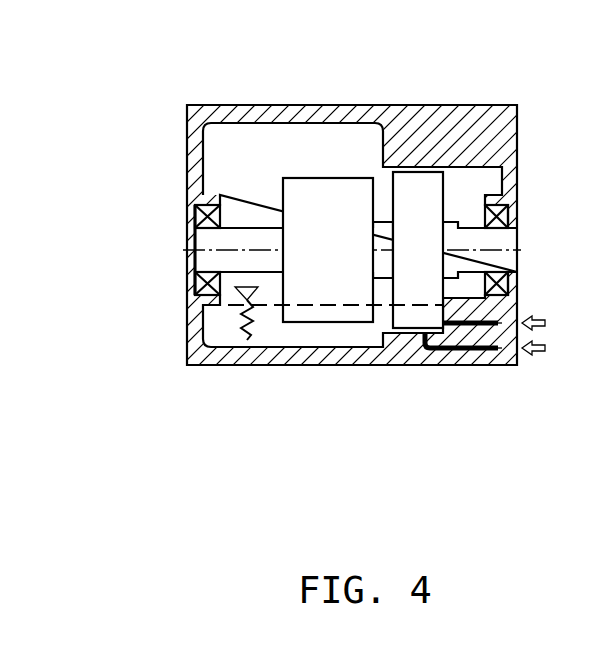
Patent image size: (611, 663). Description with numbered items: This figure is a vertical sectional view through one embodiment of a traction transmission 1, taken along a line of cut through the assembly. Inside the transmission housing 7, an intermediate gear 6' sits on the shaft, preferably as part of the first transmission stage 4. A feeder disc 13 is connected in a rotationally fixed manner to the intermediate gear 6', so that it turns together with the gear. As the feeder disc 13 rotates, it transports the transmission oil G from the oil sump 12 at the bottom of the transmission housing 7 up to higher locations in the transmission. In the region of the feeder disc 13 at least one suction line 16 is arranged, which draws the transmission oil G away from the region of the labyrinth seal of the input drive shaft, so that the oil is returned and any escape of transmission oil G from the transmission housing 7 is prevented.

The traction transmission 1 is at (156, 396).
The first transmission stage 4 is at (157, 294).
The intermediate gear 6' is at (310, 167).
The transmission housing 7 is at (481, 114).
The oil sump 12 is at (267, 344).
The feeder disc 13 is at (415, 186).
The suction line 16 is at (510, 336).
The transmission oil G is at (319, 342).